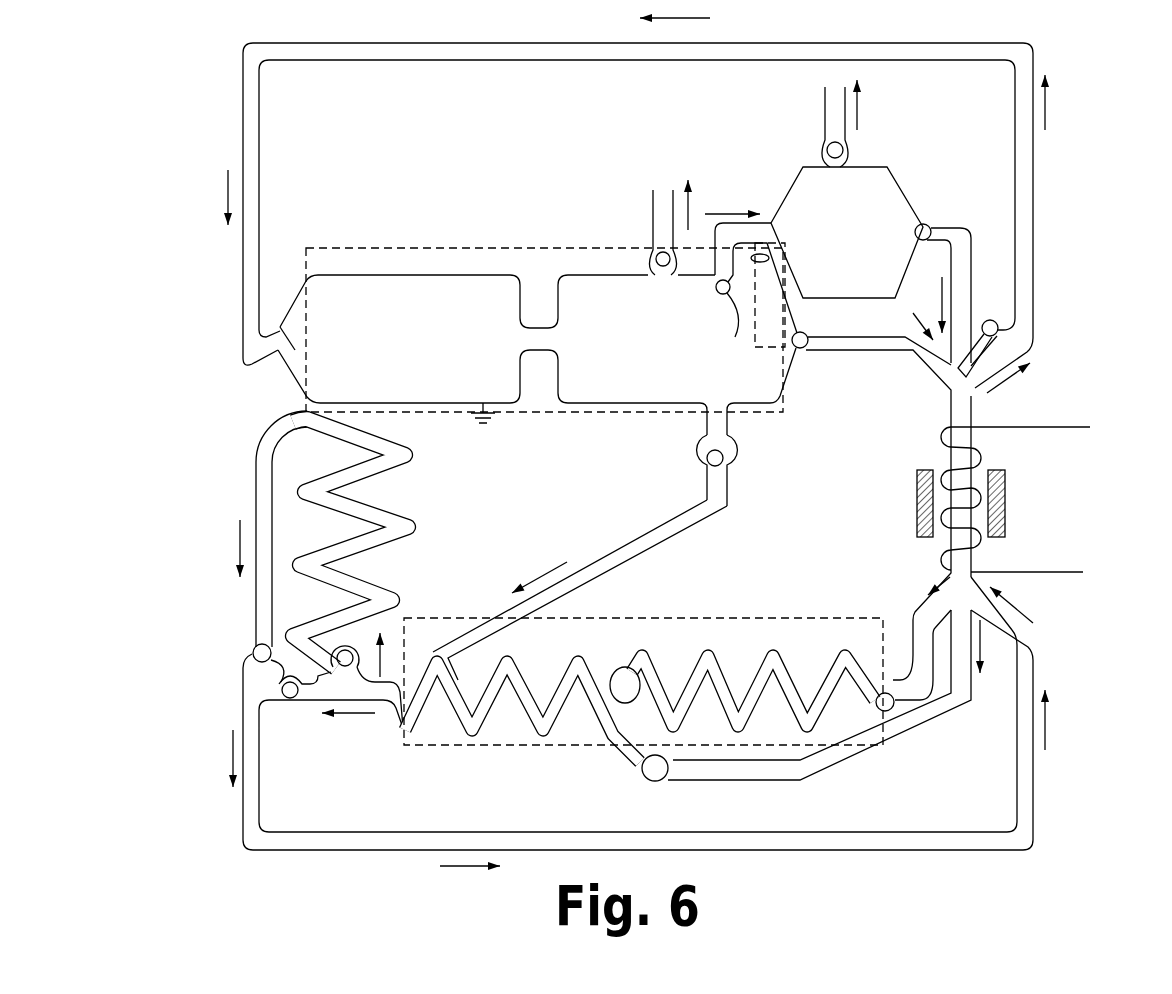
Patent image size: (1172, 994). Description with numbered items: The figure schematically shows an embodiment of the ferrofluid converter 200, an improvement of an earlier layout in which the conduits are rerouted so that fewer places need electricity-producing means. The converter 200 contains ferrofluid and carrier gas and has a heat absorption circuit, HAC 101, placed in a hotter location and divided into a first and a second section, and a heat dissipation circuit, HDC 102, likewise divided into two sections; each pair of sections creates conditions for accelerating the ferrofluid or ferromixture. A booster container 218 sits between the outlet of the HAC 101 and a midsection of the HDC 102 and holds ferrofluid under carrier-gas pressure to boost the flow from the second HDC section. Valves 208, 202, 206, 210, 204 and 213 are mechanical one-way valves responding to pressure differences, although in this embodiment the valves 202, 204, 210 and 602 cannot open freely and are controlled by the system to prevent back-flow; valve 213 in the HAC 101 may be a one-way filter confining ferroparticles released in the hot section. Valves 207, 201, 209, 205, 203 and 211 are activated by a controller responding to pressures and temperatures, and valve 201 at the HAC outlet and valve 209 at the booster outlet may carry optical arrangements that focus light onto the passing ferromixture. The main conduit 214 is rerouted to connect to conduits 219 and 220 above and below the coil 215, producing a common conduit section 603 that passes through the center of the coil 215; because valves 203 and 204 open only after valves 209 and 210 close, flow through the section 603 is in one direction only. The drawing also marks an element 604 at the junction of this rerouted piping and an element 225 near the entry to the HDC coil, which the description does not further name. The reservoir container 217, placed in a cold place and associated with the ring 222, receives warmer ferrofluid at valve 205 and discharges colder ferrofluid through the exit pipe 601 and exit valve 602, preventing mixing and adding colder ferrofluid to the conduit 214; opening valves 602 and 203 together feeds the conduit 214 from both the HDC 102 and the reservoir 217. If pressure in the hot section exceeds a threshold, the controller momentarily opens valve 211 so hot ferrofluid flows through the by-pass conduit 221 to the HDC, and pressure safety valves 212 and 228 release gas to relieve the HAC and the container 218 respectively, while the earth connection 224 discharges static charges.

The converter 200 is at (200, 100).
The HAC 101 is at (465, 247).
The HDC 102 is at (790, 616).
The activated valve 201 is at (802, 348).
The one-way valve 202 is at (887, 705).
The valve 203 is at (285, 700).
The one-way valve 204 is at (290, 340).
The valve 205 is at (353, 670).
The one-way valve 206 is at (630, 657).
The valve 207 is at (745, 308).
The one-way valve 208 is at (783, 237).
The valve 209 is at (917, 235).
The one-way valve 210 is at (668, 780).
The valve 211 is at (723, 460).
The pressure safety valve 212 is at (650, 250).
The one-way valve 213 is at (550, 340).
The conduit 214 is at (1037, 157).
The coil 215 is at (1047, 428).
The reservoir container 217 is at (393, 527).
The booster container 218 is at (793, 187).
The conduit 219 is at (962, 288).
The conduit 220 is at (906, 342).
The by-pass conduit 221 is at (618, 557).
The ring 222 is at (917, 500).
The earth connection 224 is at (493, 413).
The coil inlet 225 is at (437, 660).
The pressure safety valve 228 is at (827, 143).
The exit pipe 601 is at (255, 492).
The exit valve 602 is at (250, 653).
The conduit section 603 is at (977, 413).
The valve 604 is at (1000, 330).